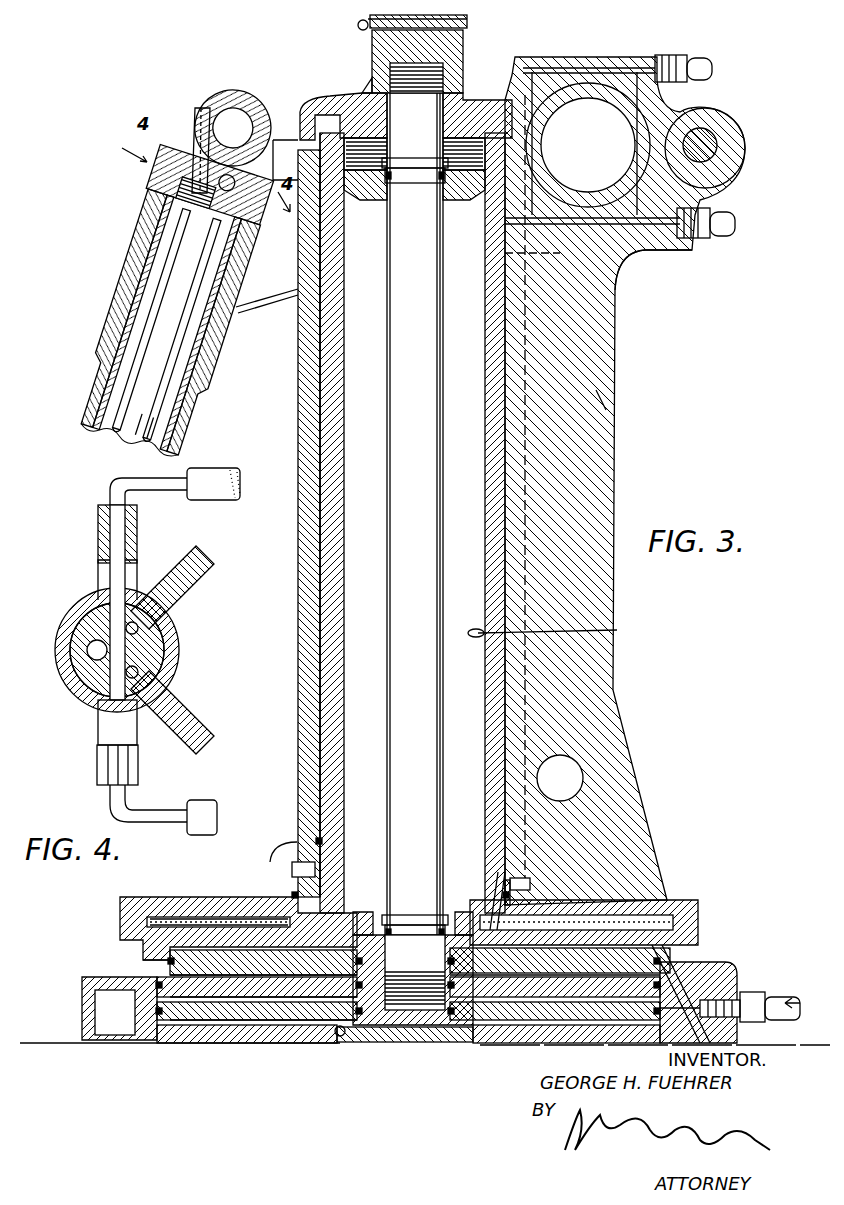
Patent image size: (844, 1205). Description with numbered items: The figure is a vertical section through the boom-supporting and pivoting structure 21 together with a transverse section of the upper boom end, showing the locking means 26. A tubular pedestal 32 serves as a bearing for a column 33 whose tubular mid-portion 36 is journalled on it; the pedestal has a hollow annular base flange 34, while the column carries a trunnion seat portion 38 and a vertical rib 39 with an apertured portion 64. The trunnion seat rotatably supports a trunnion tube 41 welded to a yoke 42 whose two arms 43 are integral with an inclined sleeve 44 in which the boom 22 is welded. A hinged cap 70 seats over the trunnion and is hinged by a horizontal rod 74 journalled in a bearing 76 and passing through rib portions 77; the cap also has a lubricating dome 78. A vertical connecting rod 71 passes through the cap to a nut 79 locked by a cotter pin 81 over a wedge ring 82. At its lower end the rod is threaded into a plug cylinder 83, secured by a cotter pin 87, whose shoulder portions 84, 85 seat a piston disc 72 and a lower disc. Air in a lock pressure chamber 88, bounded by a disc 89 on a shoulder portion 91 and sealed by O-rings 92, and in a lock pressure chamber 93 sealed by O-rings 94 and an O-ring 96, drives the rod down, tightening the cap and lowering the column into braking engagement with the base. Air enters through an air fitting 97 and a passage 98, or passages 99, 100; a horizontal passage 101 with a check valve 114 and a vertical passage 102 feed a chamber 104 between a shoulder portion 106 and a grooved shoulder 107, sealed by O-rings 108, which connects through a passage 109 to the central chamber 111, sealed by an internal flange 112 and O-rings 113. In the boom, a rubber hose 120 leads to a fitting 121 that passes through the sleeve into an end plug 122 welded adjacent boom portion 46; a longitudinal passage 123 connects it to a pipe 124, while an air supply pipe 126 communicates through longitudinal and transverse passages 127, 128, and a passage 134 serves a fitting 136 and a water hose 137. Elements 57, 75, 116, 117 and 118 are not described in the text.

In FIG. 3, the boom-supporting and pivoting structure 21 is at (638, 476).
In FIG. 3, the boom 22 is at (184, 266).
In FIG. 4, the boom 22 is at (49, 662).
In FIG. 3, the locking means 26 is at (670, 50).
In FIG. 3, the tubular pedestal 32 is at (312, 725).
In FIG. 3, the column 33 is at (290, 757).
In FIG. 3, the base flange 34 is at (150, 966).
In FIG. 3, the tubular mid-portion 36 is at (298, 521).
In FIG. 3, the trunnion seat portion 38 is at (625, 250).
In FIG. 3, the vertical rib 39 is at (596, 400).
In FIG. 3, the trunnion tube 41 is at (545, 165).
In FIG. 3, the yoke 42 is at (285, 150).
In FIG. 3, the arms 43 is at (272, 292).
In FIG. 4, the arms 43 is at (200, 562).
In FIG. 3, the sleeve 44 is at (167, 323).
In FIG. 4, the sleeve 44 is at (72, 622).
In FIG. 3, the boom portion 46 is at (167, 323).
In FIG. 3, the base plate 57 is at (130, 912).
In FIG. 3, the apertured portion 64 is at (610, 763).
In FIG. 3, the hinged cap 70 is at (346, 96).
In FIG. 3, the connecting rod 71 is at (392, 485).
In FIG. 3, the piston disc 72 is at (255, 967).
In FIG. 3, the horizontal rod 74 is at (717, 160).
In FIG. 3, the base ring 75 is at (230, 1012).
In FIG. 3, the bearing 76 is at (735, 146).
In FIG. 3, the rib portions 77 is at (600, 40).
In FIG. 3, the lubricating dome 78 is at (556, 75).
In FIG. 3, the nut 79 is at (463, 57).
In FIG. 3, the cotter pin 81 is at (358, 25).
In FIG. 3, the wedge ring 82 is at (368, 90).
In FIG. 3, the plug cylinder 83 is at (460, 1022).
In FIG. 3, the shoulder portion 84 is at (360, 956).
In FIG. 3, the shoulder portion 85 is at (336, 1036).
In FIG. 3, the cotter pin 87 is at (338, 1040).
In FIG. 3, the lock pressure chamber 88 is at (290, 1030).
In FIG. 3, the disc 89 is at (208, 992).
In FIG. 3, the shoulder portion 91 is at (157, 988).
In FIG. 3, the O-rings 92 is at (155, 1011).
In FIG. 3, the lock pressure chamber 93 is at (230, 952).
In FIG. 3, the O-rings 94 is at (466, 963).
In FIG. 3, the O-ring 96 is at (373, 928).
In FIG. 3, the air fitting 97 is at (762, 992).
In FIG. 3, the passage 98 is at (712, 1000).
In FIG. 3, the passage 99 is at (678, 987).
In FIG. 3, the passage 100 is at (660, 942).
In FIG. 3, the horizontal passage 101 is at (680, 915).
In FIG. 3, the vertical passage 102 is at (500, 890).
In FIG. 3, the chamber 104 is at (518, 885).
In FIG. 3, the shoulder portion 106 is at (525, 870).
In FIG. 3, the grooved shoulder 107 is at (506, 900).
In FIG. 3, the O-rings 108 is at (296, 838).
In FIG. 3, the passage 109 is at (294, 868).
In FIG. 3, the central chamber 111 is at (566, 630).
In FIG. 3, the internal flange 112 is at (470, 205).
In FIG. 3, the O-rings 113 is at (446, 182).
In FIG. 3, the check valve 114 is at (640, 922).
In FIG. 3, the shim 116 is at (147, 925).
In FIG. 3, the shim 117 is at (180, 919).
In FIG. 3, the shim 118 is at (180, 924).
In FIG. 3, the rubber hose 120 is at (778, 1018).
In FIG. 4, the rubber hose 120 is at (222, 470).
In FIG. 4, the fitting 121 is at (100, 549).
In FIG. 3, the end plug 122 is at (209, 185).
In FIG. 4, the end plug 122 is at (150, 652).
In FIG. 3, the longitudinal passage 123 is at (227, 183).
In FIG. 4, the longitudinal passage 123 is at (140, 630).
In FIG. 3, the pipe 124 is at (144, 426).
In FIG. 3, the air supply pipe 126 is at (166, 325).
In FIG. 3, the longitudinal passage 127 is at (201, 150).
In FIG. 4, the longitudinal passage 127 is at (88, 658).
In FIG. 3, the transverse passage 128 is at (233, 128).
In FIG. 4, the passage 134 is at (140, 681).
In FIG. 4, the fitting 136 is at (96, 766).
In FIG. 4, the hose 137 is at (206, 820).